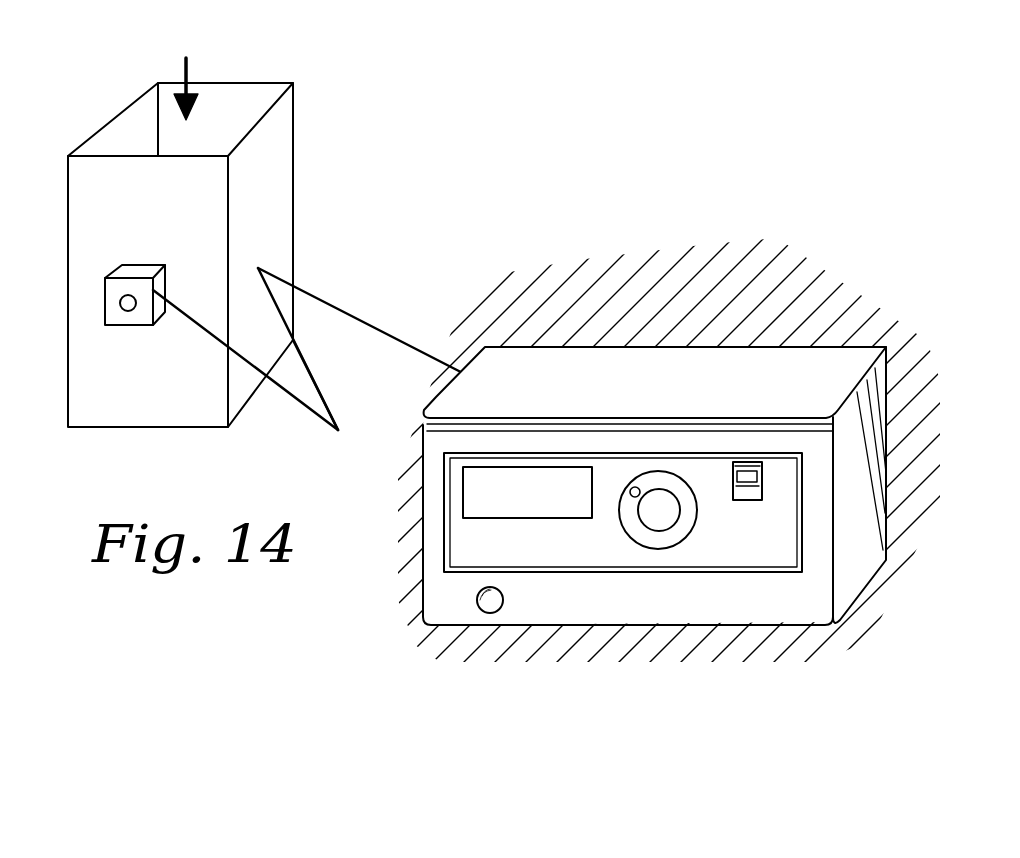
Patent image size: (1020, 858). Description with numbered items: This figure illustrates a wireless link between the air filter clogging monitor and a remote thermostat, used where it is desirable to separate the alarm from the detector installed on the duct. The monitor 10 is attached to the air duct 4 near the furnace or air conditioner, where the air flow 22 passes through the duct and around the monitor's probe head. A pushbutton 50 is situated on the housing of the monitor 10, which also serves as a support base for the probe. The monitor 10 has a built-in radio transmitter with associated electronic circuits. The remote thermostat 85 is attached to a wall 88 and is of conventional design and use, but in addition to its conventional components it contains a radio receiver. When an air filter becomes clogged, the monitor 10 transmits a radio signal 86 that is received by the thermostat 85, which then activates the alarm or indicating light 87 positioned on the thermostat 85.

The air duct 4 is at (278, 185).
The air flow 22 is at (187, 73).
The monitor 10 is at (147, 318).
The pushbutton 50 is at (127, 312).
The radio signal 86 is at (378, 328).
The wall 88 is at (743, 258).
The thermostat 85 is at (745, 600).
The indicating light 87 is at (500, 610).